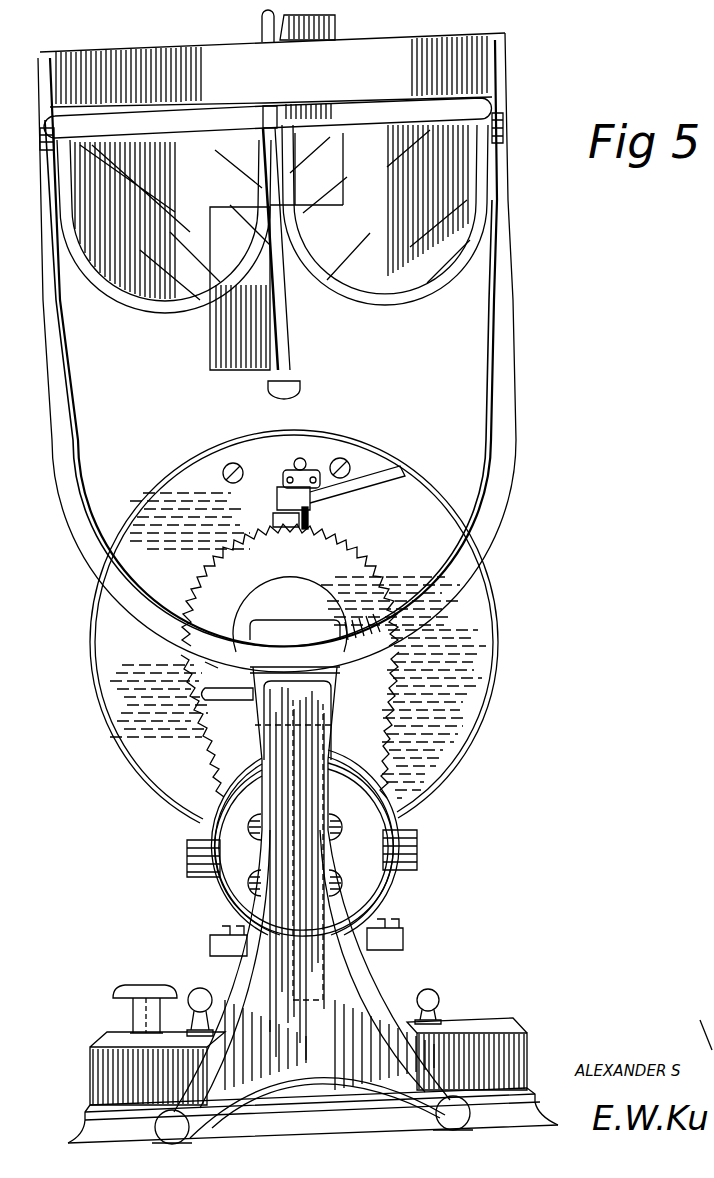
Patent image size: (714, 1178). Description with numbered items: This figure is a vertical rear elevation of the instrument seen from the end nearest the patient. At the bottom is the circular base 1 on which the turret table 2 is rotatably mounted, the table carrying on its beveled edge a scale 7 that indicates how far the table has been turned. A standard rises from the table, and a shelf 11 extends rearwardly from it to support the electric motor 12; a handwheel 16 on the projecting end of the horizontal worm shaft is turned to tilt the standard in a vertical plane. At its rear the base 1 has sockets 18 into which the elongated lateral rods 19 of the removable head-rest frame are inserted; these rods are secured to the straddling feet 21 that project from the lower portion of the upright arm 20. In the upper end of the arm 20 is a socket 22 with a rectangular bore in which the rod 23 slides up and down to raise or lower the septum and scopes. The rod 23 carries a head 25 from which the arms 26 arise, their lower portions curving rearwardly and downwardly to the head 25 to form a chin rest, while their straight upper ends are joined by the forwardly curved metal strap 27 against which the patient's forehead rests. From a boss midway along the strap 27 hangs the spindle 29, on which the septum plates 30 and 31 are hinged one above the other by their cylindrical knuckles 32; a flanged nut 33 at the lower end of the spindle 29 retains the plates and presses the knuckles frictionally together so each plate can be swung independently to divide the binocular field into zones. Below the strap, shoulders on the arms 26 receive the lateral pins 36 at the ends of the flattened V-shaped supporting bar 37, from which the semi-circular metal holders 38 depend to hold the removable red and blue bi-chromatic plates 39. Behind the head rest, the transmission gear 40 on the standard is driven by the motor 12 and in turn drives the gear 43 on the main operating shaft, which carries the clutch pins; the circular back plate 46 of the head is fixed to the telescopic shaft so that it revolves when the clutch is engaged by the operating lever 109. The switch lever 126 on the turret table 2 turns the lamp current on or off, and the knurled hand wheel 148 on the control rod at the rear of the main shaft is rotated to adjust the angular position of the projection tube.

The circular base 1 is at (520, 1117).
The table 2 is at (513, 1057).
The scale 7 is at (510, 1030).
The shelf 11 is at (395, 945).
The electric motor 12 is at (383, 893).
The handwheel 16 is at (350, 1107).
The sockets 18 is at (157, 1142).
The lateral rods 19 is at (173, 1132).
The upright arm 20 is at (267, 981).
The straddling feet 21 is at (200, 1100).
The socket 22 is at (197, 697).
The rod 23 is at (323, 980).
The head 25 is at (287, 632).
The arms 26 is at (60, 410).
The metal strap 27 is at (162, 52).
The spindle 29 is at (262, 18).
The septum plate 30 is at (336, 28).
The septum plate 31 is at (230, 357).
The cylindrical knuckles 32 is at (280, 337).
The flanged nut 33 is at (293, 387).
The lateral pins 36 is at (45, 155).
The supporting bar 37 is at (462, 116).
The metal holders 38 is at (140, 297).
The bi-chromatic plates 39 is at (173, 267).
The transmission gear 40 is at (227, 763).
The gear 43 is at (210, 667).
The circular back plate 46 is at (457, 730).
The operating handle or lever 109 is at (370, 483).
The switch lever 126 is at (200, 990).
The knurled hand wheel 148 is at (265, 598).